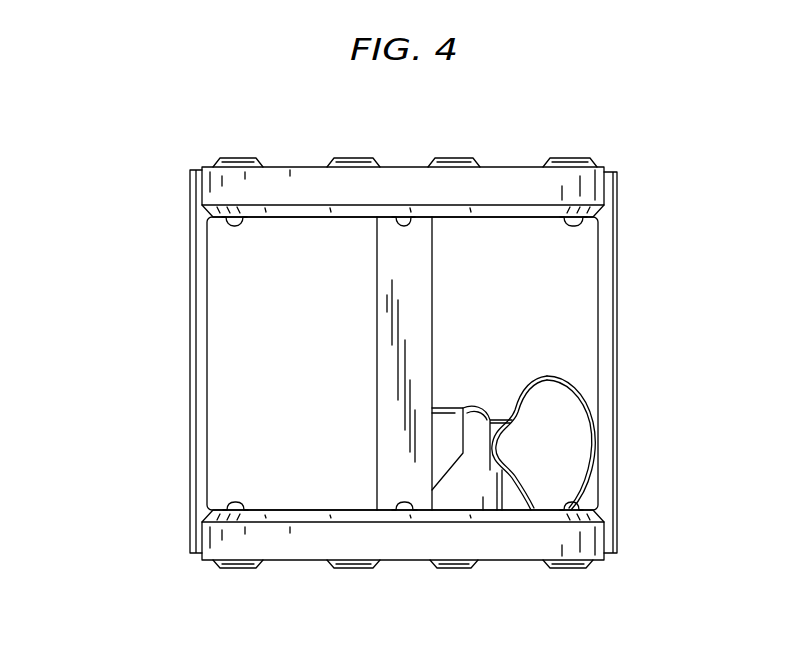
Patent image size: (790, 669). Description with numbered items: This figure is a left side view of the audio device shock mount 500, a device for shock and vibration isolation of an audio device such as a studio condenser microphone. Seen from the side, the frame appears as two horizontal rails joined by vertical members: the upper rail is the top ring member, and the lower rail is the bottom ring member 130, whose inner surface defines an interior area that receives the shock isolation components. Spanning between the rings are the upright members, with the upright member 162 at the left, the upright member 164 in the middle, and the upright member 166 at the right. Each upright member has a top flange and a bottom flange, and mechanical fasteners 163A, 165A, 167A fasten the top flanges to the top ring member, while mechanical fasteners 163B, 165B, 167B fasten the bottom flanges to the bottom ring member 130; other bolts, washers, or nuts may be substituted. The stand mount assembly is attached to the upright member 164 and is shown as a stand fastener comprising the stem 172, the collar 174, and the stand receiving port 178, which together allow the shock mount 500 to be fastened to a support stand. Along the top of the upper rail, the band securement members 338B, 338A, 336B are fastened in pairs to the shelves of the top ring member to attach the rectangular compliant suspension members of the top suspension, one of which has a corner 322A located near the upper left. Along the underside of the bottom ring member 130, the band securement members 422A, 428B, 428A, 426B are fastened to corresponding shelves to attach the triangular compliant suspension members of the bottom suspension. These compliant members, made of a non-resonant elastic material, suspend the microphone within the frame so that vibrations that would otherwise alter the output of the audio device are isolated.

The audio device shock mount 500 is at (133, 125).
The bottom ring member 130 is at (516, 551).
The upright member 162 is at (190, 290).
The upright member 166 is at (617, 262).
The upright member 164 is at (419, 259).
The mechanical fastener 163A is at (235, 228).
The mechanical fastener 165A is at (412, 226).
The mechanical fastener 167A is at (575, 228).
The mechanical fastener 163B is at (232, 502).
The mechanical fastener 165B is at (400, 502).
The mechanical fastener 167B is at (580, 505).
The stem 172 is at (452, 407).
The collar 174 is at (488, 419).
The stand receiving port 178 is at (547, 375).
The corner of compliant suspension member 322A is at (233, 158).
The band securement member 338B is at (350, 158).
The band securement member 338A is at (448, 158).
The band securement member 336B is at (568, 158).
The band securement member 422A is at (236, 568).
The band securement member 428B is at (352, 568).
The band securement member 428A is at (452, 568).
The band securement member 426B is at (570, 568).